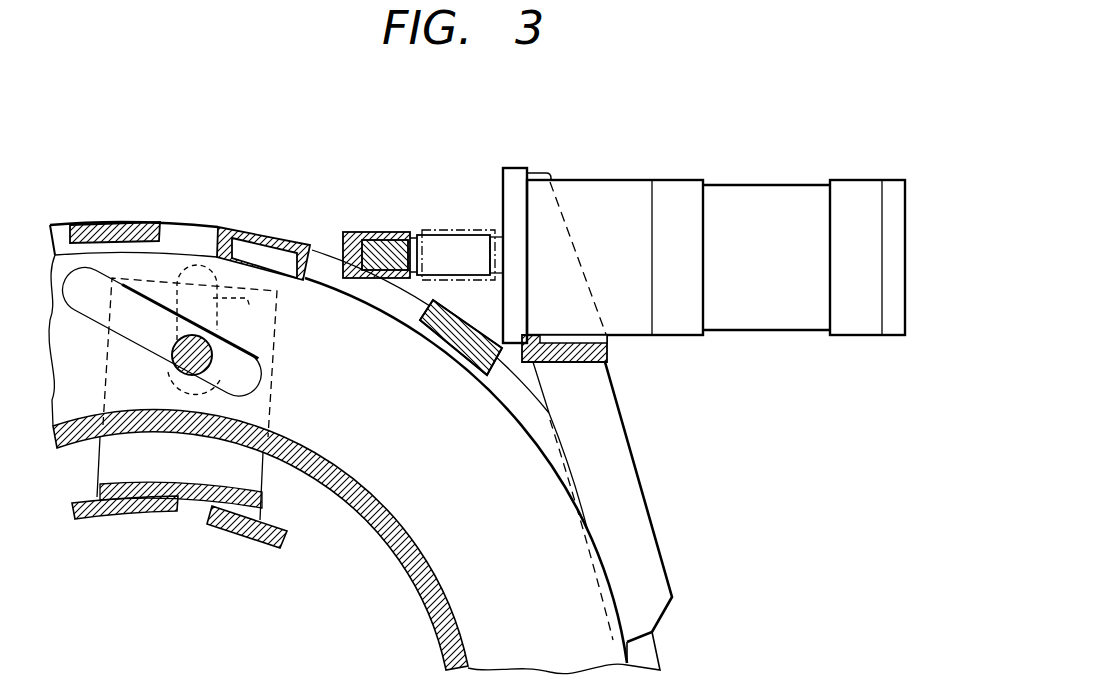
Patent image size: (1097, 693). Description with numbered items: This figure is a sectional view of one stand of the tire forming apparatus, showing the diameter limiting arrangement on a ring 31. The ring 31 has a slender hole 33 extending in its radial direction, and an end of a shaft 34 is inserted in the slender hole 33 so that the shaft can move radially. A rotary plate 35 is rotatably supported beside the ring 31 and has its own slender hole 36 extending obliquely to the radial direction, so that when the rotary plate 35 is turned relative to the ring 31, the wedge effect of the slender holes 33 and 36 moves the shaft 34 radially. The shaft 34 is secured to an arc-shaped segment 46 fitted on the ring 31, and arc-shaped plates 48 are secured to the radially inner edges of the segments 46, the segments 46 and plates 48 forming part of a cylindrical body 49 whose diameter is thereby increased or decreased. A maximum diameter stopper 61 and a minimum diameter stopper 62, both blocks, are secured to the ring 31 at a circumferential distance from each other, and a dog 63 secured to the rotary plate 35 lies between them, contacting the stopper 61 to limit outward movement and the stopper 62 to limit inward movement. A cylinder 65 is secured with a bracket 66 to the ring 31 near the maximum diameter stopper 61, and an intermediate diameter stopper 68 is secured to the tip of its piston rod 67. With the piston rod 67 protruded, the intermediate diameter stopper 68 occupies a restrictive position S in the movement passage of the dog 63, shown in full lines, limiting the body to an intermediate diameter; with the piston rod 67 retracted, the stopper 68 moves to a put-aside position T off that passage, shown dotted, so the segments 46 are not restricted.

The ring 31 is at (178, 228).
The slender hole 33 is at (230, 302).
The shaft 34 is at (213, 356).
The rotary plate 35 is at (195, 262).
The slender hole 36 is at (137, 347).
The arc-shaped segment 46 is at (256, 491).
The arc-shaped plate 48 is at (135, 504).
The cylindrical body 49 is at (198, 512).
The maximum diameter stopper 61 is at (447, 345).
The minimum diameter stopper 62 is at (118, 222).
The dog 63 is at (278, 226).
The cylinder 65 is at (617, 188).
The bracket 66 is at (618, 438).
The piston rod 67 is at (466, 247).
The intermediate diameter stopper 68 is at (376, 232).
The restrictive position S is at (344, 231).
The put-aside position T is at (452, 229).